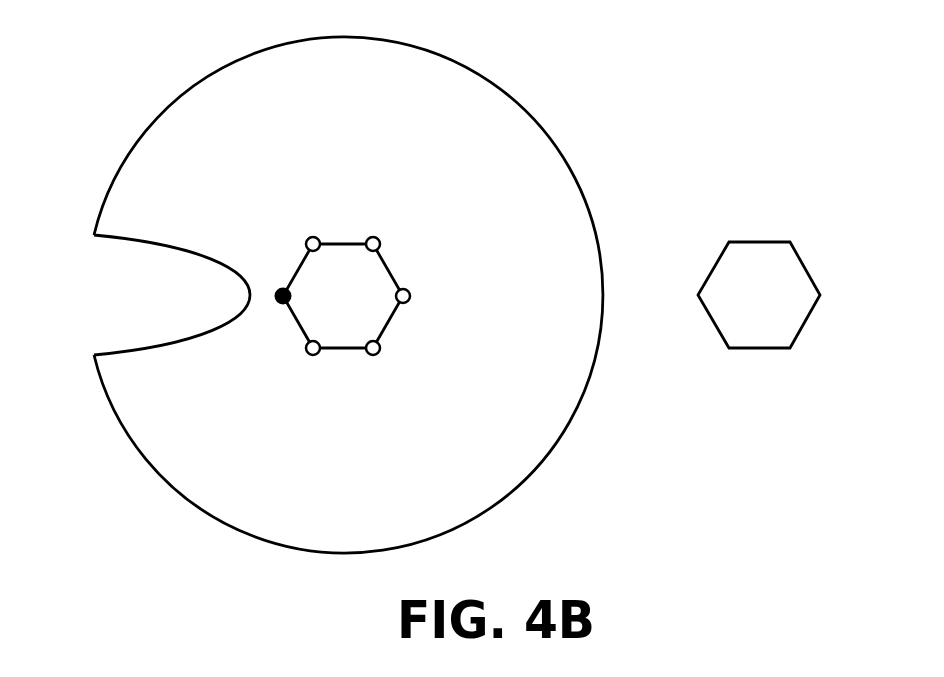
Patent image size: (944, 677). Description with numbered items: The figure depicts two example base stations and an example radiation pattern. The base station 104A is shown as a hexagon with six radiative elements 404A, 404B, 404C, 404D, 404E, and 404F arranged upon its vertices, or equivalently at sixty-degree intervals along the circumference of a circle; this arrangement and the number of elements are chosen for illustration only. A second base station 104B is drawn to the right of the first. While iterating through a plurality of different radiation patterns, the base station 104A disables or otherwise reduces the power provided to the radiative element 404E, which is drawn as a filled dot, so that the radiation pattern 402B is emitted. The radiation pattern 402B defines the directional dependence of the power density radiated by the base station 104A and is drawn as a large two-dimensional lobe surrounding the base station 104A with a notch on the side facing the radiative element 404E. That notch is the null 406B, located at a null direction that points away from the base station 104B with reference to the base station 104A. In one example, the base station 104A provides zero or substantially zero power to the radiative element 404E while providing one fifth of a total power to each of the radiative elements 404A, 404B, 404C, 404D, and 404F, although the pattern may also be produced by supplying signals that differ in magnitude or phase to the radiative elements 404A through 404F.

The radiation pattern 402B is at (530, 113).
The null 406B is at (92, 293).
The base station 104A is at (316, 336).
The base station 104B is at (732, 334).
The radiative element 404A is at (373, 237).
The radiative element 404B is at (403, 289).
The radiative element 404C is at (375, 355).
The radiative element 404D is at (315, 355).
The radiative element 404E is at (279, 291).
The radiative element 404F is at (316, 237).